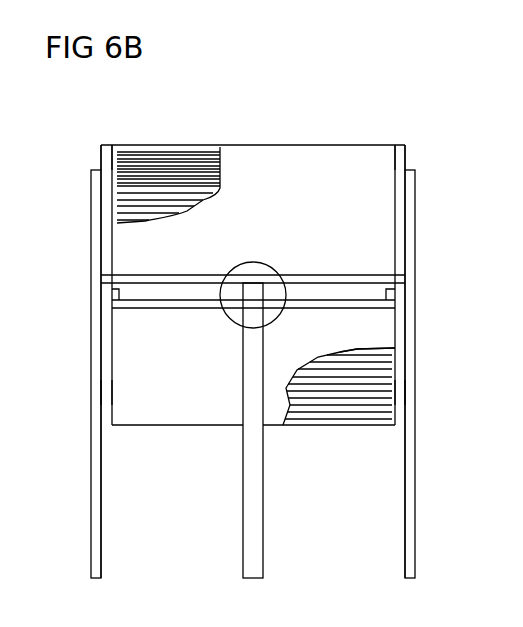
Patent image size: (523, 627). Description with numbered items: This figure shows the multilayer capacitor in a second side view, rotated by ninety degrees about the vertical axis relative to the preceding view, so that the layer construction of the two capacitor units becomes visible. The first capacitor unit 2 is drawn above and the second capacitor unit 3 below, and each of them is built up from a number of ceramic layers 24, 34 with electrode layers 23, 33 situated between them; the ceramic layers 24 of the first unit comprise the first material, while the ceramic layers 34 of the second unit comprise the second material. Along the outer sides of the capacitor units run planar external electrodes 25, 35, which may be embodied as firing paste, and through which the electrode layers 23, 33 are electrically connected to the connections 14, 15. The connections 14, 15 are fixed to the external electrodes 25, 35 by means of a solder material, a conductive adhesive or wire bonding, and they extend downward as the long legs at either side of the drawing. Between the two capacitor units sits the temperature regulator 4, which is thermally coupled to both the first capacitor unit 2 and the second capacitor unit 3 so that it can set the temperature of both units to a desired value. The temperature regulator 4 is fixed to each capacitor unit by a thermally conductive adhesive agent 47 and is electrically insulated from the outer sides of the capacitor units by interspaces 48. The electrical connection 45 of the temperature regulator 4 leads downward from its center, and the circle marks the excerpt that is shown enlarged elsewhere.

The first capacitor unit 2 is at (288, 163).
The second capacitor unit 3 is at (178, 414).
The temperature regulator 4 is at (307, 293).
The connection 14 is at (97, 558).
The connection 15 is at (415, 558).
The electrode layers 23 is at (190, 163).
The ceramic layers 24 is at (140, 162).
The external electrode 25 is at (108, 157).
The electrode layers 33 is at (338, 380).
The ceramic layers 34 is at (400, 352).
The external electrode 35 is at (105, 392).
The electrical connection 45 is at (256, 520).
The thermally conductive adhesive agent 47 is at (347, 277).
The interspaces 48 is at (118, 290).